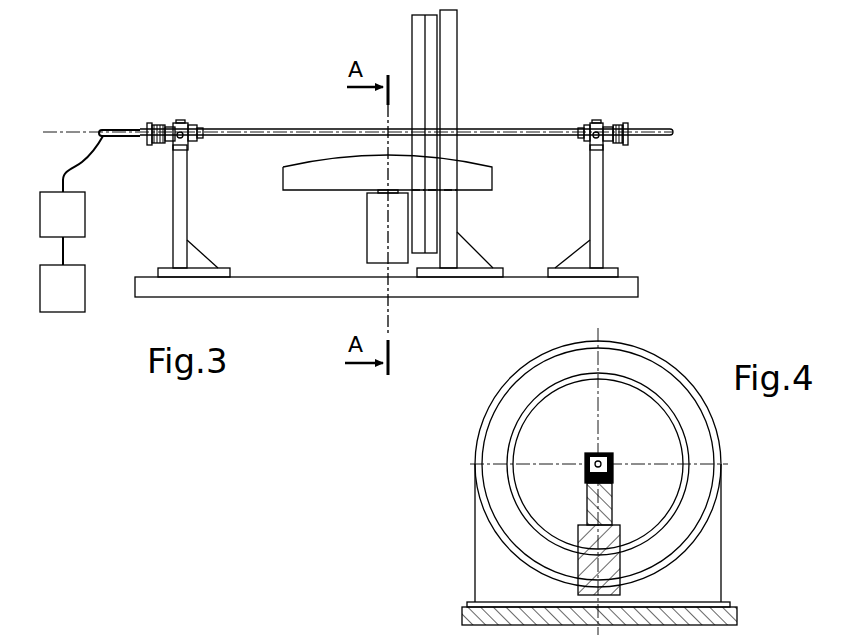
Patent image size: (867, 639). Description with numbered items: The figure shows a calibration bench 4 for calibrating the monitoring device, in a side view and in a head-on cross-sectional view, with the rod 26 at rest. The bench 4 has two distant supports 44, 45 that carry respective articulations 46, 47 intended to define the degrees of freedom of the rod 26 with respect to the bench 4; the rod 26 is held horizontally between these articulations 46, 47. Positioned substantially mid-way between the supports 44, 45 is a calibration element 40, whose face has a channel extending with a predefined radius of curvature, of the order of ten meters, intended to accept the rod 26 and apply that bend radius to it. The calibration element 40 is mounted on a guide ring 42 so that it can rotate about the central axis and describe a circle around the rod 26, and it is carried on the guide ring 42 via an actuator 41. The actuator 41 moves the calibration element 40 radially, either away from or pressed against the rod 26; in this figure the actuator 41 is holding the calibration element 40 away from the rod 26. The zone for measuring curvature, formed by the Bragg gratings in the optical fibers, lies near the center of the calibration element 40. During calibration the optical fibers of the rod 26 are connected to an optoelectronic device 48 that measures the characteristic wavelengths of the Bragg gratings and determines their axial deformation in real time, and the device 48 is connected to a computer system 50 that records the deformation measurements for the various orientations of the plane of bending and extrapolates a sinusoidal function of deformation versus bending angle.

In FIG. 3, the calibration bench 4 is at (300, 88).
In FIG. 3, the rod 26 is at (660, 130).
In FIG. 4, the rod 26 is at (600, 453).
In FIG. 3, the calibration element 40 is at (490, 176).
In FIG. 4, the calibration element 40 is at (586, 512).
In FIG. 3, the actuator 41 is at (376, 215).
In FIG. 4, the actuator 41 is at (622, 565).
In FIG. 3, the guide ring 42 is at (412, 43).
In FIG. 4, the guide ring 42 is at (497, 508).
In FIG. 3, the support 44 is at (600, 190).
In FIG. 3, the support 45 is at (186, 180).
In FIG. 3, the articulation 46 is at (620, 122).
In FIG. 3, the articulation 47 is at (172, 122).
In FIG. 3, the optoelectronic device 48 is at (76, 226).
In FIG. 3, the computer system 50 is at (76, 299).